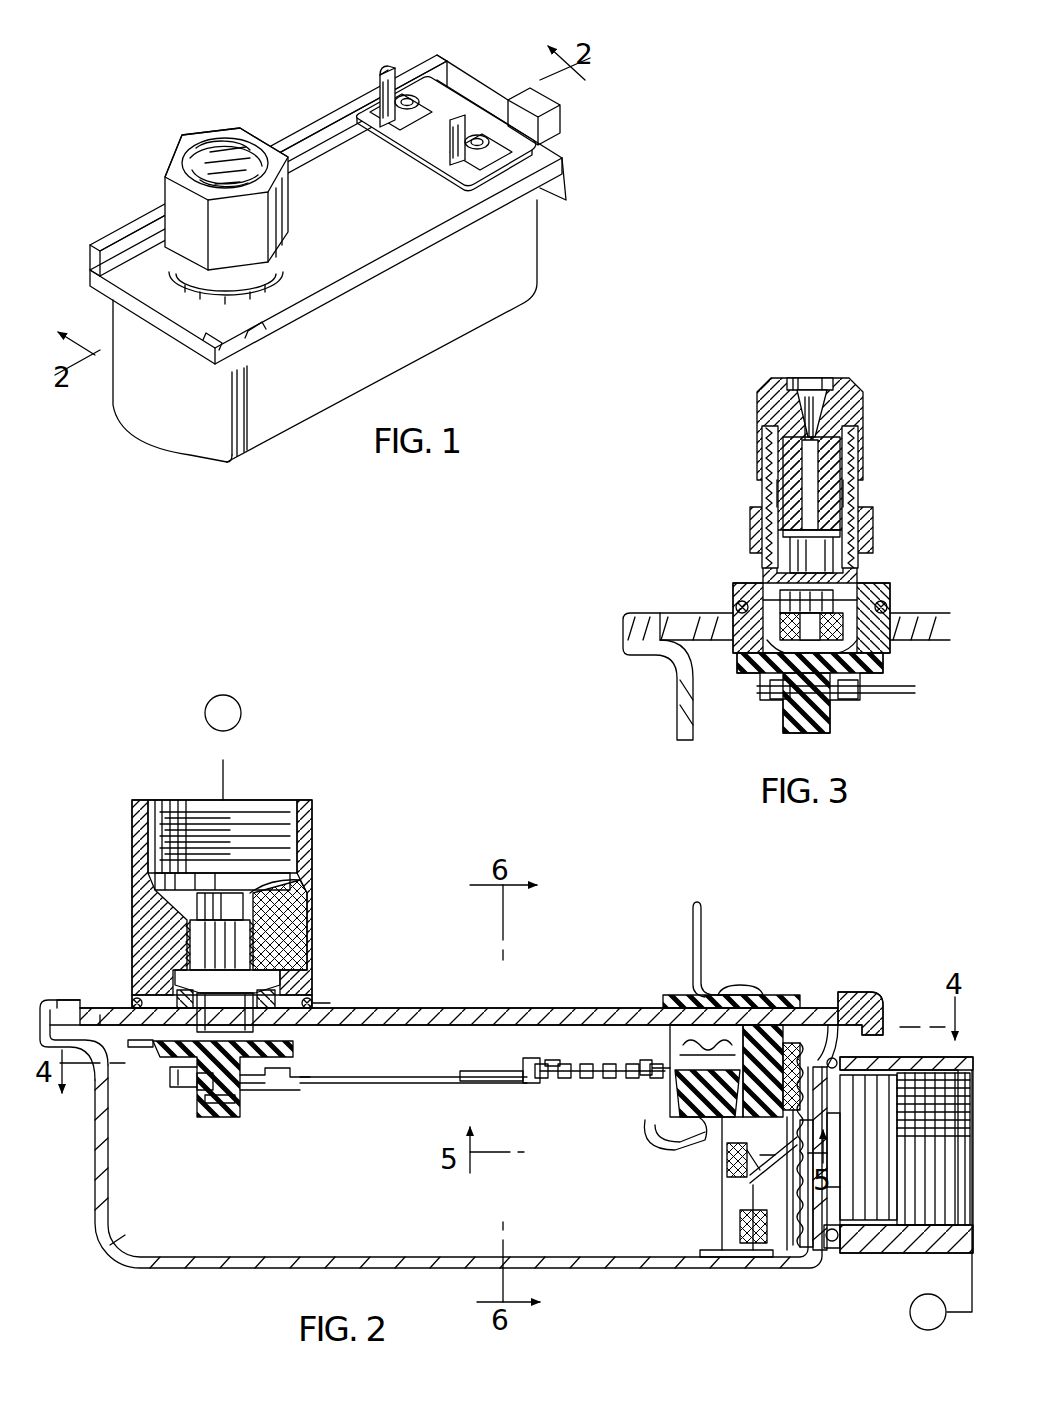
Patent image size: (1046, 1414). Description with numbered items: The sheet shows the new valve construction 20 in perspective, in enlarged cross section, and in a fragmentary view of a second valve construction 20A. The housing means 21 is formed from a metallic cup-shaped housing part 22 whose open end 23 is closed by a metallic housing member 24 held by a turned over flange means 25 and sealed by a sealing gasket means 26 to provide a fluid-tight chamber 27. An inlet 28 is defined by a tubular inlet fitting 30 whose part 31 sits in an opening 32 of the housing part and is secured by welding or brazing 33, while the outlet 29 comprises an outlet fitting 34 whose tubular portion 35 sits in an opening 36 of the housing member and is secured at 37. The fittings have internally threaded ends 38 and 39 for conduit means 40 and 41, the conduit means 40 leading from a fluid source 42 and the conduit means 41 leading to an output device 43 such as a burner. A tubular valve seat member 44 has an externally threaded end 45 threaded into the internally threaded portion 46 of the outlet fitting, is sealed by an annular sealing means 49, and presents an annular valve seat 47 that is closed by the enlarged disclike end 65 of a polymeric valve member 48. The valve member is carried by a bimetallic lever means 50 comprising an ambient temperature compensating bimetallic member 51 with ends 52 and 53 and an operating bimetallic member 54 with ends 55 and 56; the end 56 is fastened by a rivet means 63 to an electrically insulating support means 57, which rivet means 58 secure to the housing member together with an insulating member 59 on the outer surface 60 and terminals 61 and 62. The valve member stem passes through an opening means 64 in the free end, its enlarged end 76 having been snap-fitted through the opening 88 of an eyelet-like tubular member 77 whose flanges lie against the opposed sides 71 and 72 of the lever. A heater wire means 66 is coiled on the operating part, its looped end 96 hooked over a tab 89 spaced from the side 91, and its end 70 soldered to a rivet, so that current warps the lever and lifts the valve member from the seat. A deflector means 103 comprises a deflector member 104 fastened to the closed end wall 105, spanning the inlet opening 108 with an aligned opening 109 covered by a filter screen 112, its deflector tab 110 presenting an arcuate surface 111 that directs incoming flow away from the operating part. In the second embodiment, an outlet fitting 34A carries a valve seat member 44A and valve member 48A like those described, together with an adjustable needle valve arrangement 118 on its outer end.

In FIG. 1, the valve construction 20 is at (295, 62).
In FIG. 2, the valve construction 20 is at (440, 888).
In FIG. 3, the valve construction 20A is at (700, 590).
In FIG. 1, the housing means 21 is at (357, 339).
In FIG. 2, the housing means 21 is at (429, 1202).
In FIG. 1, the cup-shaped housing part 22 is at (160, 422).
In FIG. 2, the cup-shaped housing part 22 is at (200, 1270).
In FIG. 2, the open end 23 is at (100, 1018).
In FIG. 1, the housing member 24 is at (388, 218).
In FIG. 2, the housing member 24 is at (432, 1008).
In FIG. 1, the turned over flange means 25 is at (108, 245).
In FIG. 2, the turned over flange means 25 is at (75, 1000).
In FIG. 2, the sealing gasket means 26 is at (58, 1000).
In FIG. 2, the chamber 27 is at (175, 1230).
In FIG. 2, the inlet 28 is at (905, 1235).
In FIG. 2, the outlet 29 is at (265, 838).
In FIG. 1, the tubular inlet fitting 30 is at (568, 200).
In FIG. 2, the part 31 is at (805, 1250).
In FIG. 2, the opening 32 is at (838, 1140).
In FIG. 2, the securing means 33 is at (835, 1242).
In FIG. 1, the outlet fitting 34 is at (172, 165).
In FIG. 2, the outlet fitting 34 is at (312, 852).
In FIG. 3, the outlet fitting 34A is at (880, 590).
In FIG. 2, the tubular portion 35 is at (308, 998).
In FIG. 2, the opening 36 is at (330, 1008).
In FIG. 1, the securing means 37 is at (283, 270).
In FIG. 2, the securing means 37 is at (352, 1000).
In FIG. 2, the internally threaded end 38 is at (937, 1093).
In FIG. 2, the internally threaded end 39 is at (233, 806).
In FIG. 2, the conduit means 40 is at (972, 1282).
In FIG. 2, the conduit means 41 is at (220, 753).
In FIG. 2, the fluid source 42 is at (925, 1330).
In FIG. 2, the output device 43 is at (240, 705).
In FIG. 2, the tubular valve seat member 44 is at (255, 955).
In FIG. 3, the valve seat member 44A is at (762, 588).
In FIG. 2, the externally threaded end 45 is at (263, 893).
In FIG. 2, the resilient seal 46 is at (283, 930).
In FIG. 2, the annular valve seat 47 is at (157, 1043).
In FIG. 2, the valve member 48 is at (185, 1057).
In FIG. 3, the valve member 48A is at (800, 688).
In FIG. 2, the annular sealing means 49 is at (265, 980).
In FIG. 2, the bimetallic lever means 50 is at (410, 1119).
In FIG. 2, the ambient temperature compensating bimetallic member 51 is at (410, 1086).
In FIG. 2, the end 52 is at (260, 1092).
In FIG. 2, the end 53 is at (488, 1082).
In FIG. 2, the operating bimetallic member 54 is at (577, 1065).
In FIG. 2, the end 55 is at (470, 1074).
In FIG. 2, the end 56 is at (745, 1068).
In FIG. 2, the electrically insulating support means 57 is at (763, 1037).
In FIG. 1, the rivet means 58 is at (405, 105).
In FIG. 2, the rivet means 58 is at (740, 985).
In FIG. 1, the insulating member 59 is at (413, 138).
In FIG. 2, the insulating member 59 is at (672, 998).
In FIG. 1, the outer surface 60 is at (300, 150).
In FIG. 2, the outer surface 60 is at (612, 1005).
In FIG. 1, the terminal 61 is at (470, 138).
In FIG. 1, the terminal 62 is at (383, 100).
In FIG. 2, the terminal 62 is at (703, 922).
In FIG. 2, the rivet means 63 is at (680, 1058).
In FIG. 2, the opening means 64 is at (205, 1092).
In FIG. 2, the enlarged disclike end 65 is at (300, 1050).
In FIG. 2, the heater wire means 66 is at (588, 1083).
In FIG. 2, the end 70 is at (707, 1153).
In FIG. 2, the side 71 is at (290, 1085).
In FIG. 2, the side 72 is at (298, 1092).
In FIG. 2, the enlarged end 76 is at (190, 1087).
In FIG. 2, the tubular member 77 is at (228, 1105).
In FIG. 2, the opening 88 is at (226, 1011).
In FIG. 2, the tab 89 is at (550, 1060).
In FIG. 2, the side 91 is at (500, 1071).
In FIG. 2, the looped end 96 is at (542, 1060).
In FIG. 2, the deflector means 103 is at (712, 1175).
In FIG. 2, the deflector member 104 is at (740, 1262).
In FIG. 2, the closed end wall 105 is at (568, 1257).
In FIG. 2, the inlet opening 108 is at (830, 1055).
In FIG. 2, the opening 109 is at (730, 1258).
In FIG. 2, the deflector tab 110 is at (712, 1210).
In FIG. 2, the arcuate surface 111 is at (725, 1192).
In FIG. 2, the filter screen 112 is at (810, 1043).
In FIG. 3, the adjustable needle valve arrangement 118 is at (843, 405).